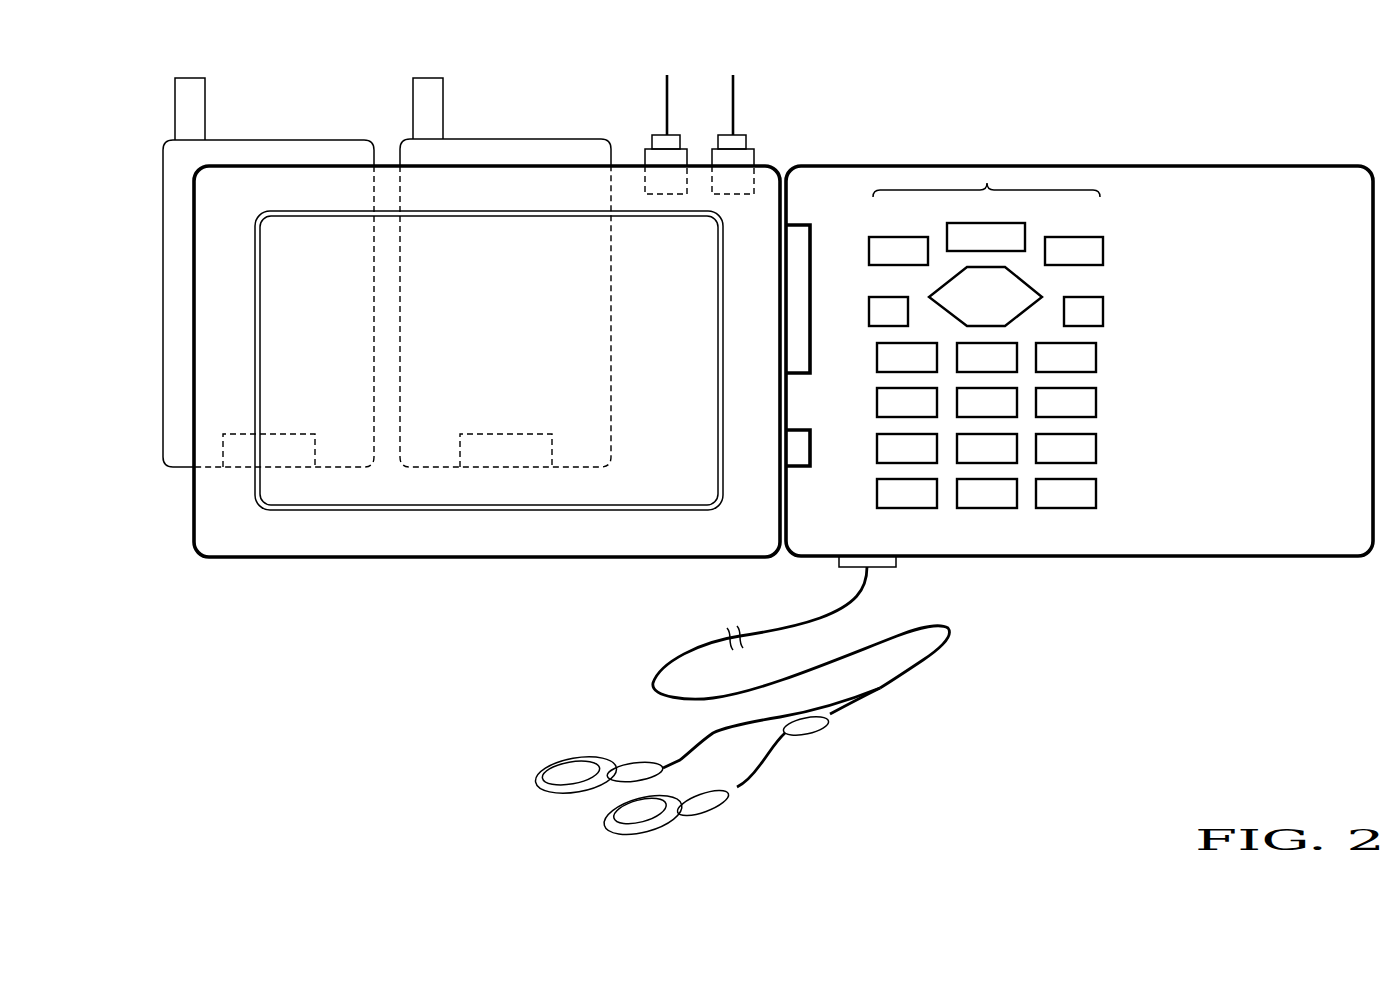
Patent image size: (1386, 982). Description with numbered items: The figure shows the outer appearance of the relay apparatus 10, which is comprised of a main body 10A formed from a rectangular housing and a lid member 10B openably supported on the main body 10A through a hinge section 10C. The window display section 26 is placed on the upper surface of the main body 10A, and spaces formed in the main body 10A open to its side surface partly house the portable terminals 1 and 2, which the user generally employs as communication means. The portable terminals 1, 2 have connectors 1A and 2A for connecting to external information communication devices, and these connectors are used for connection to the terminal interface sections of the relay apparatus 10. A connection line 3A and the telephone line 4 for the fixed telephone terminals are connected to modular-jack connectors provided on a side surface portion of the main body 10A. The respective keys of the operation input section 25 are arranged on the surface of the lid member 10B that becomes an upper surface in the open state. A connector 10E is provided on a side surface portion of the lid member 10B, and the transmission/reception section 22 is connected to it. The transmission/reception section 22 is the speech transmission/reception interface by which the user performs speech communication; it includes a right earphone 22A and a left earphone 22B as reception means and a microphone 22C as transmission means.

The relay apparatus 10 is at (891, 82).
The main body 10A is at (278, 560).
The lid member 10B is at (1277, 560).
The hinge section 10C is at (790, 375).
The connector 10E is at (883, 570).
The operation input section 25 is at (987, 183).
The window display section 26 is at (388, 512).
The portable terminal 1 is at (312, 138).
The connector 1A is at (297, 432).
The portable terminal 2 is at (532, 138).
The connector 2A is at (517, 432).
The telephone line 4 is at (665, 105).
The connection line 3A is at (735, 105).
The transmission/reception section 22 is at (943, 733).
The right earphone 22A is at (543, 770).
The left earphone 22B is at (603, 823).
The microphone 22C is at (813, 733).